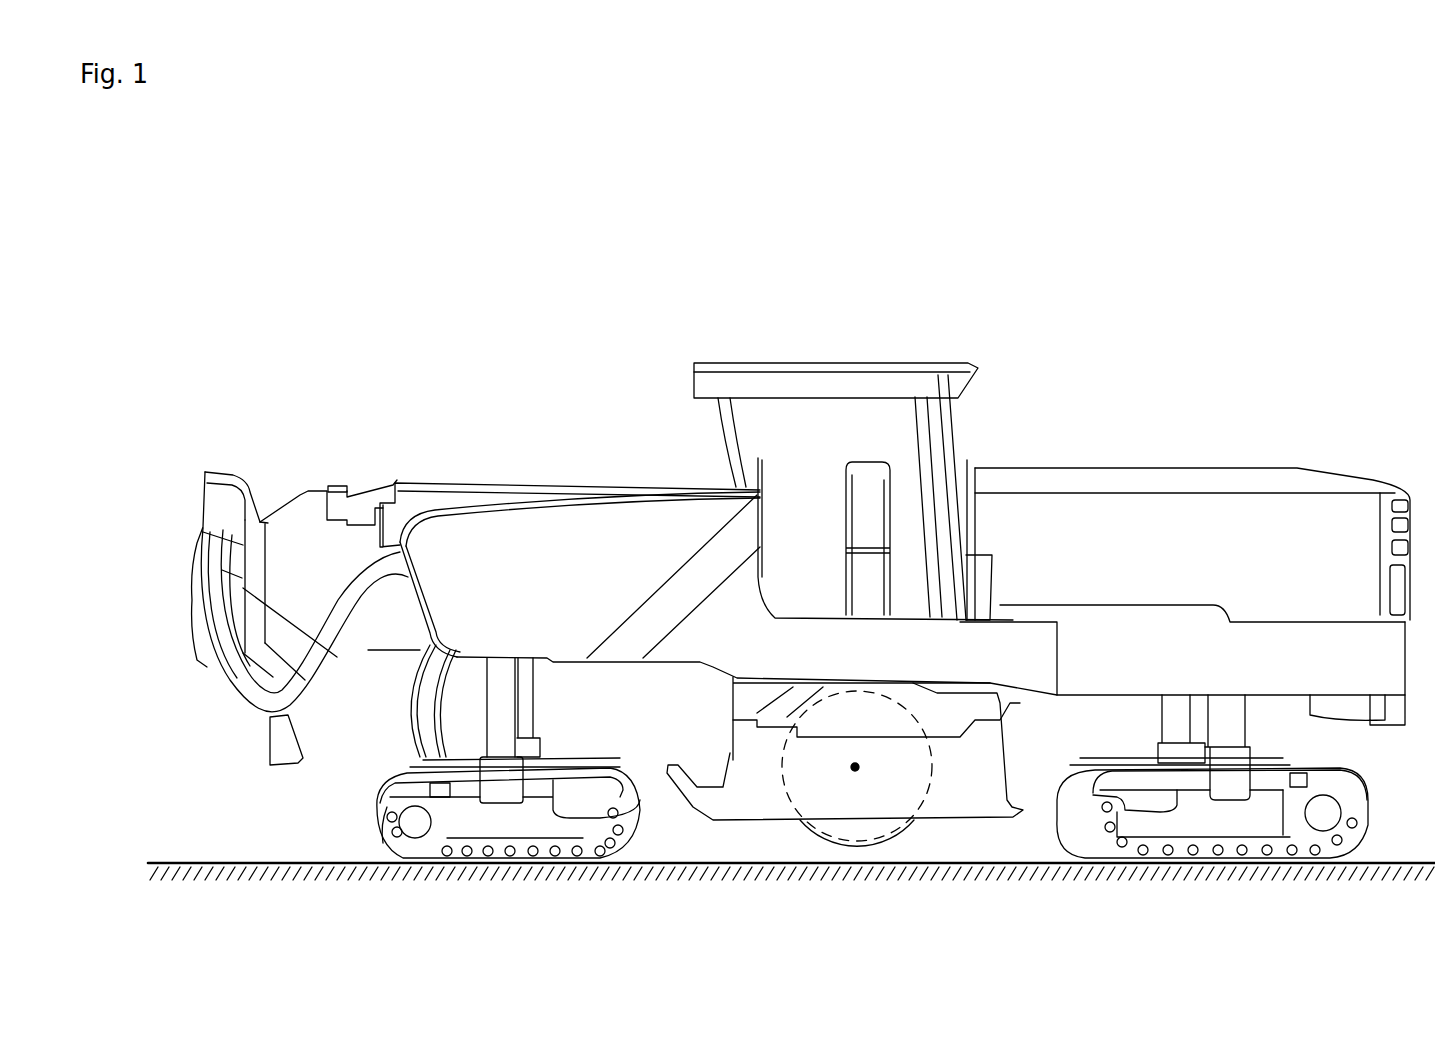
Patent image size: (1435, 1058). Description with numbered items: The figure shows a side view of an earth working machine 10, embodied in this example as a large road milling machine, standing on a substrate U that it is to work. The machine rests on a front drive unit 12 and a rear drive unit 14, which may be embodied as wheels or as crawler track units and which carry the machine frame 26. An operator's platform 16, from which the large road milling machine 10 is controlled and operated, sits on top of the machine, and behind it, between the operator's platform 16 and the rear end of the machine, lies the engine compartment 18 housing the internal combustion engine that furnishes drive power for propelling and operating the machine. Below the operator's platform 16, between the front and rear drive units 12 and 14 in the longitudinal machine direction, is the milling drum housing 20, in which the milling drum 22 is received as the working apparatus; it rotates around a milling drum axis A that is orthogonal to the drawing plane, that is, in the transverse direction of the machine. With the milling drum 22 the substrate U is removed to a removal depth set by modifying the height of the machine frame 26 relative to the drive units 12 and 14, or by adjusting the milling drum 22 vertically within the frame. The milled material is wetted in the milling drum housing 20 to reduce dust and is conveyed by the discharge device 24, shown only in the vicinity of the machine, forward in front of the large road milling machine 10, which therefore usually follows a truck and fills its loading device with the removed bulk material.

The earth working machine 10 is at (1288, 312).
The front drive unit 12 is at (577, 817).
The rear drive unit 14 is at (1083, 807).
The operator's platform 16 is at (829, 360).
The engine compartment 18 is at (1185, 592).
The milling drum housing 20 is at (845, 748).
The milling drum 22 is at (862, 843).
The discharge device 24 is at (285, 540).
The machine frame 26 is at (553, 555).
The milling drum axis A is at (857, 770).
The substrate U is at (178, 862).